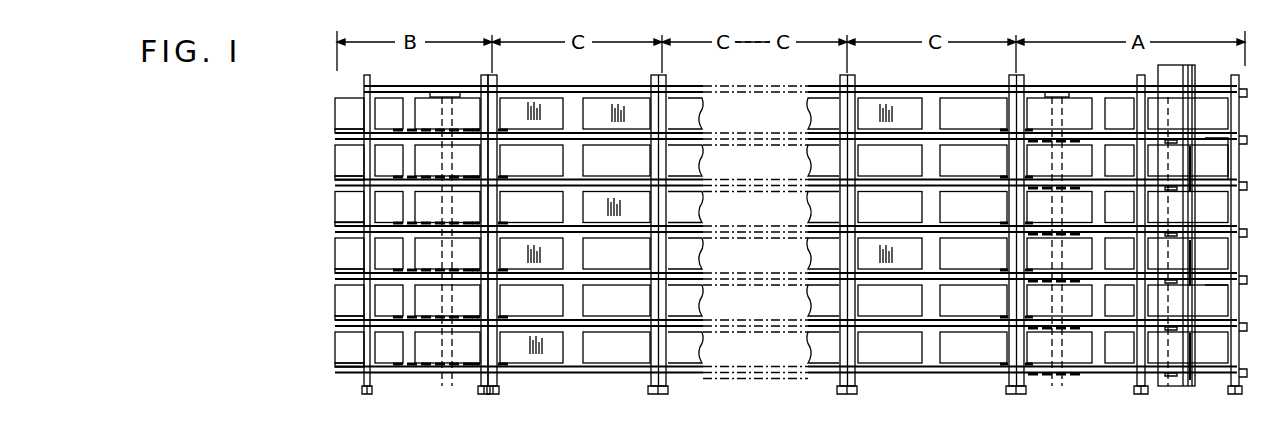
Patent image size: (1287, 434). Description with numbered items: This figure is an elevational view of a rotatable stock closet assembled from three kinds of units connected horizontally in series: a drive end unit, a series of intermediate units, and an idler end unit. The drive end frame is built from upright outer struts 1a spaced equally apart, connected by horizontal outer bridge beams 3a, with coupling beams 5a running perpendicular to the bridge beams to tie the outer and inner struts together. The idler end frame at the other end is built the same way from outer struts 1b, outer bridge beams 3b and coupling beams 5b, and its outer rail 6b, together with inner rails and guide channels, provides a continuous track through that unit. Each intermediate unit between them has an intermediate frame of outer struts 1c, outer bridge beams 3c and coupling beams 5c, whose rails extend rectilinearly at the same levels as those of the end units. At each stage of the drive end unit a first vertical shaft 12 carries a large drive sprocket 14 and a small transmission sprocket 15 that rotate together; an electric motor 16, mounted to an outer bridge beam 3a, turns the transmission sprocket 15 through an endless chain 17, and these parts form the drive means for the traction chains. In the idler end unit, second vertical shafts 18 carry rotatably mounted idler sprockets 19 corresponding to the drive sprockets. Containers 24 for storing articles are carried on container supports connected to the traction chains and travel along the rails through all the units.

The outer struts 1a is at (1240, 104).
The outer struts 1b is at (483, 80).
The outer struts 1c is at (1028, 80).
The outer bridge beams 3a is at (1248, 380).
The outer bridge beams 3b is at (370, 262).
The outer bridge beams 3c is at (936, 260).
The coupling beams 5a is at (1240, 392).
The coupling beams 5b is at (482, 392).
The coupling beams 5c is at (1010, 390).
The outer rail 6b is at (338, 316).
The first vertical shaft 12 is at (1070, 344).
The drive sprocket 14 is at (1008, 318).
The transmission sprocket 15 is at (1064, 378).
The electric motor 16 is at (1192, 378).
The endless chain 17 is at (1156, 378).
The second vertical shafts 18 is at (448, 253).
The idler sprockets 19 is at (392, 376).
The containers 24 is at (928, 372).